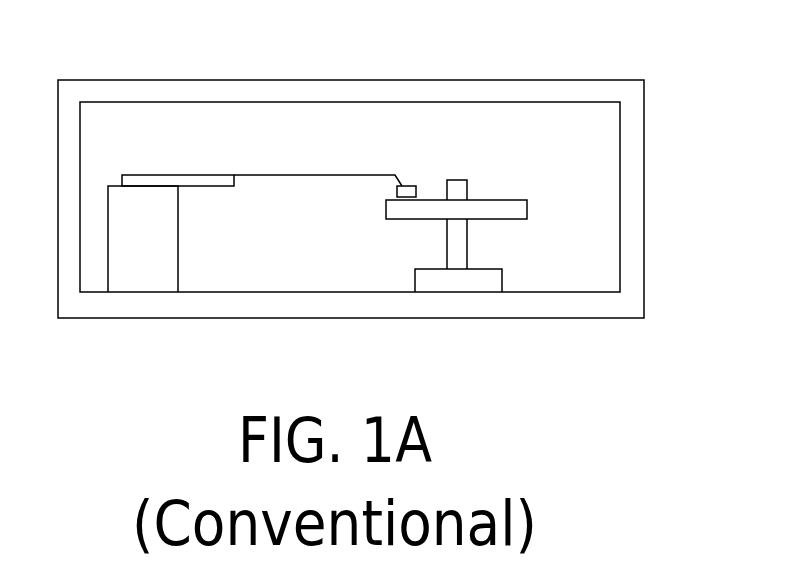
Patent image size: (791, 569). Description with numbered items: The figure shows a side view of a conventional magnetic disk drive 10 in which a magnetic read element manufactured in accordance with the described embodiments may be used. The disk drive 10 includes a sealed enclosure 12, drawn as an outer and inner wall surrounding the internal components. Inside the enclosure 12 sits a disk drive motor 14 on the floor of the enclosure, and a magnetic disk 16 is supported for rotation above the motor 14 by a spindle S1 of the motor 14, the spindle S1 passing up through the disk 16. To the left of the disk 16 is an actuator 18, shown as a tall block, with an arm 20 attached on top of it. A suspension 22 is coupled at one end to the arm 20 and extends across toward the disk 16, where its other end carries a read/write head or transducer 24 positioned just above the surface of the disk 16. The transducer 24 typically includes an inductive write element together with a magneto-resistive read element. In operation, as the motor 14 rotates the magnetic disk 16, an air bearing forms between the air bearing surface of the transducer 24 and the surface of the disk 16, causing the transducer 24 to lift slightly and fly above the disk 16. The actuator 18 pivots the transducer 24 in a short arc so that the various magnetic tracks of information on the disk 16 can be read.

The magnetic disk drive 10 is at (382, 73).
The sealed enclosure 12 is at (298, 307).
The disk drive motor 14 is at (415, 283).
The magnetic disk 16 is at (527, 205).
The actuator 18 is at (168, 275).
The arm 20 is at (195, 180).
The suspension 22 is at (337, 175).
The read/write head or transducer 24 is at (410, 189).
The spindle S1 is at (460, 188).